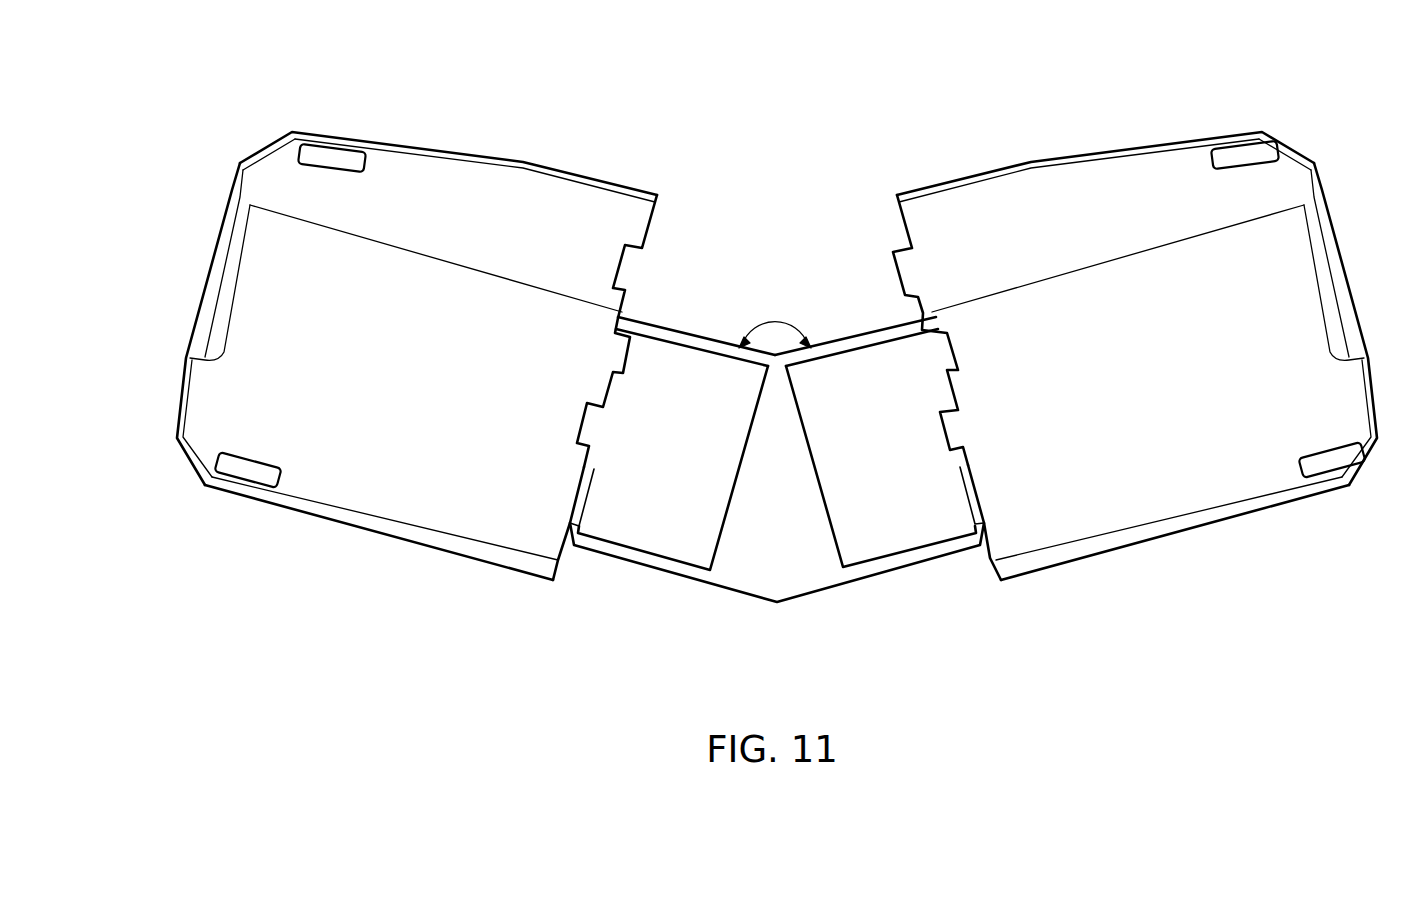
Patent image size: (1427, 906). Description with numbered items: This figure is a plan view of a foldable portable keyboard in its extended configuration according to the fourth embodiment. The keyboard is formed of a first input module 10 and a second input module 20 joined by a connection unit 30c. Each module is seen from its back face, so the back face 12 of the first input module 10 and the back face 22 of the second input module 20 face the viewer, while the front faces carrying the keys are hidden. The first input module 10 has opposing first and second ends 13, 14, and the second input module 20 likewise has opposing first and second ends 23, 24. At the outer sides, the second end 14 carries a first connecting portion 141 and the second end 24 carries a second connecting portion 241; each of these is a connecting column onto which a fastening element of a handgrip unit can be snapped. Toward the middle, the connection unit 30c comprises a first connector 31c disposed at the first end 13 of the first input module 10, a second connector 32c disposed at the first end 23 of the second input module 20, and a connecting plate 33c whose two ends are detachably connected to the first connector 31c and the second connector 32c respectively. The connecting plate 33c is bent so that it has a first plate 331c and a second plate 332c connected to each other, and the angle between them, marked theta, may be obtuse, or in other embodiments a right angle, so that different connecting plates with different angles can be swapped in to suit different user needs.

The first input module 10 is at (1156, 345).
The back face 12 is at (1202, 468).
The first end 13 is at (990, 557).
The second end 14 is at (1347, 240).
The first connecting portion 141 is at (1336, 285).
The second input module 20 is at (394, 345).
The back face 22 is at (352, 468).
The first end 23 is at (562, 557).
The second end 24 is at (207, 240).
The second connecting portion 241 is at (218, 285).
The connection unit 30c is at (777, 456).
The first connector 31c is at (970, 503).
The second connector 32c is at (580, 503).
The connecting plate 33c is at (777, 289).
The first plate 331c is at (856, 311).
The second plate 332c is at (707, 337).